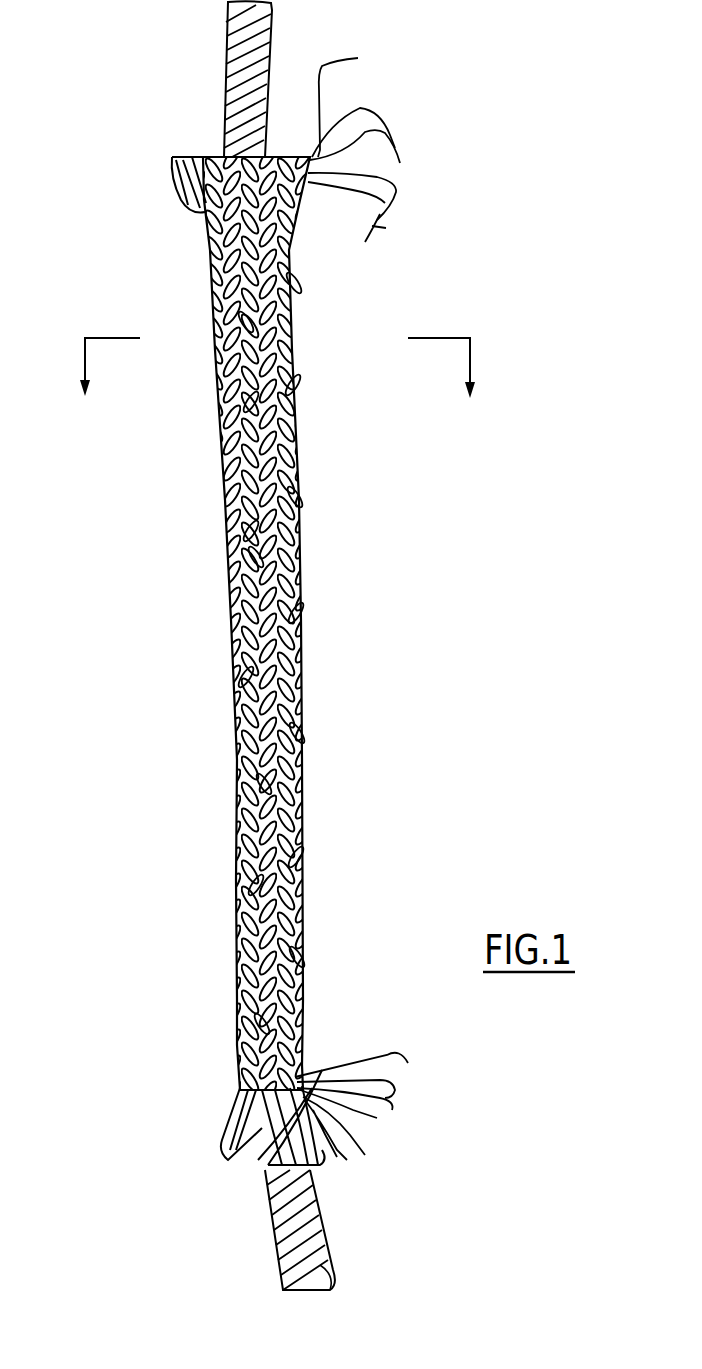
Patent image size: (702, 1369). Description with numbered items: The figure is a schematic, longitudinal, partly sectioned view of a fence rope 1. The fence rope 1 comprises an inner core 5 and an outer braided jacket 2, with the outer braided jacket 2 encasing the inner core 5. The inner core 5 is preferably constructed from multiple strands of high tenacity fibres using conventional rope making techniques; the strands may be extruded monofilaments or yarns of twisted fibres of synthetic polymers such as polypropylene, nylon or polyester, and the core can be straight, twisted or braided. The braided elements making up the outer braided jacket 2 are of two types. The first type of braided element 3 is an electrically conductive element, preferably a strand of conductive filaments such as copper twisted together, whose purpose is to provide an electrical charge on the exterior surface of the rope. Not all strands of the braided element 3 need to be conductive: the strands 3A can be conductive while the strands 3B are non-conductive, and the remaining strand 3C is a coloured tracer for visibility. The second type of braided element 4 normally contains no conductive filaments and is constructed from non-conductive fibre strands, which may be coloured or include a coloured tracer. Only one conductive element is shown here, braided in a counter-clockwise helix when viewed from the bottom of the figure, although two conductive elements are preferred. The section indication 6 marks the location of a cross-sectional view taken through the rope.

The fence rope 1 is at (530, 585).
The outer braided jacket 2 is at (124, 205).
The first type of braided element 3 is at (240, 322).
The conductive strands 3A is at (360, 59).
The non-conductive strands 3B is at (378, 117).
The coloured tracer strand 3C is at (395, 151).
The second type of braided element 4 is at (318, 283).
The inner core 5 is at (296, 29).
The section line 6- 6 is at (277, 392).